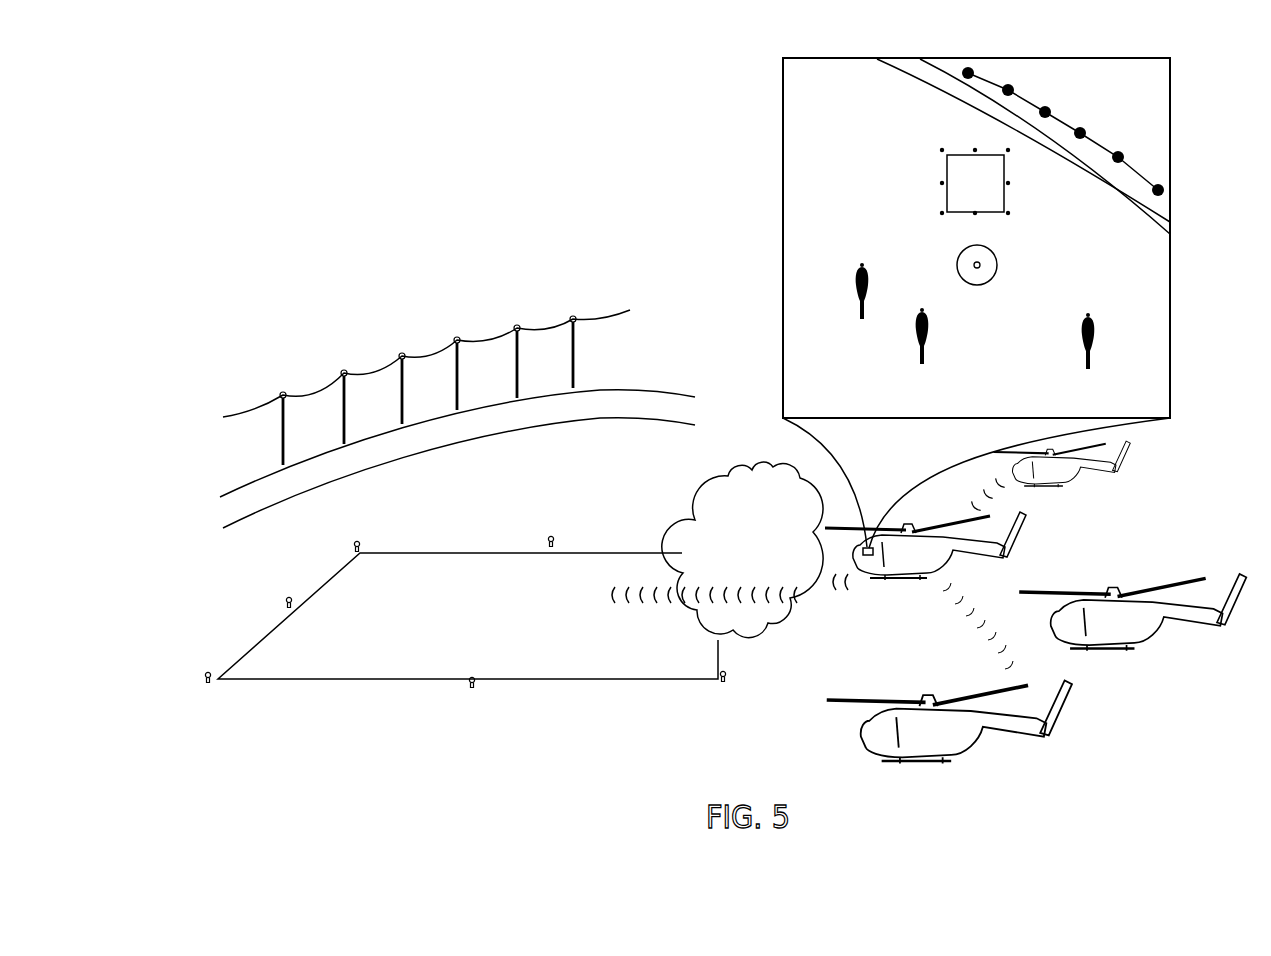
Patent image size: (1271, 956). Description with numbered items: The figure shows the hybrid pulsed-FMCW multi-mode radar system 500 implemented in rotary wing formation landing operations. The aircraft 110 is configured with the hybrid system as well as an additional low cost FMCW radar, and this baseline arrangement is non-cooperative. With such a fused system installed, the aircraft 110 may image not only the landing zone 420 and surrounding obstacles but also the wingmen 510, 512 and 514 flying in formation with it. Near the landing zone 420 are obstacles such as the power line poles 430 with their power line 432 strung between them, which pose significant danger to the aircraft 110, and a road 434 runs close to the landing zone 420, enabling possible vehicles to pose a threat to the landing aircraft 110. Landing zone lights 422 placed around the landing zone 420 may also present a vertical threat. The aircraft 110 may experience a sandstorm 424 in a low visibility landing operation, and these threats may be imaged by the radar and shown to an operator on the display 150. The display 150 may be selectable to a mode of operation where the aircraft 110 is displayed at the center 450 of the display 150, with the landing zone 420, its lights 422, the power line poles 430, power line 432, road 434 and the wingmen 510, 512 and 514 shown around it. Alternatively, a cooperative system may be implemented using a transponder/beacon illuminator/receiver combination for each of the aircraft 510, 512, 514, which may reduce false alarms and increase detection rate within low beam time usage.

The operating environment 500 is at (257, 152).
The display 150 is at (783, 135).
The aircraft 110 is at (910, 582).
The landing zone 420 is at (593, 682).
The landing zone lights 422 is at (468, 680).
The sandstorm 424 is at (771, 640).
The power line poles 430 is at (514, 327).
The fence wire 432 is at (372, 372).
The road 434 is at (627, 419).
The center 450 is at (957, 264).
The wingman 510 is at (982, 735).
The wingman 512 is at (1153, 633).
The wingman 514 is at (1080, 473).